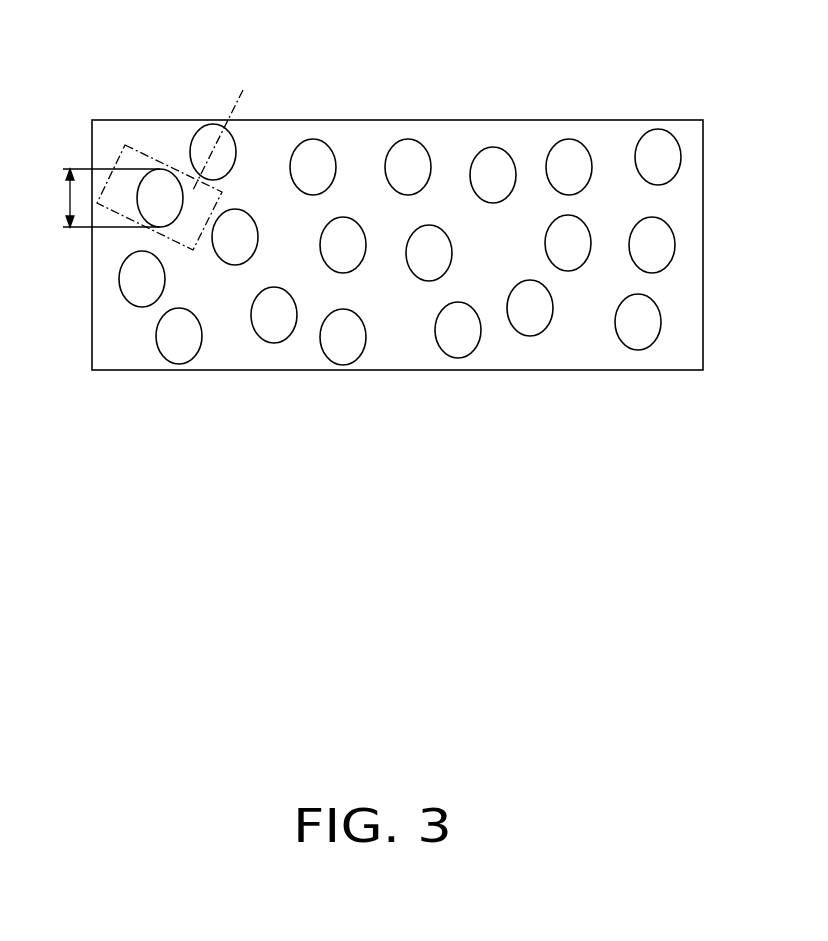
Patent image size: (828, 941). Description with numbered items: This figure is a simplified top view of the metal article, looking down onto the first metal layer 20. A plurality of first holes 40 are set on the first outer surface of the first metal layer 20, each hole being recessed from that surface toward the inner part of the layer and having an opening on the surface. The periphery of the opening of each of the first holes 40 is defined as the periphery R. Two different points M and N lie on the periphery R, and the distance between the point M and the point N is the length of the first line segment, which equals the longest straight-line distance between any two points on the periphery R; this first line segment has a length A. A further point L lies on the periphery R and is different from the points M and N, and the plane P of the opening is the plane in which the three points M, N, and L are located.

The first metal layer 20 is at (457, 135).
The first holes 40 is at (650, 148).
The plane of the opening P is at (182, 163).
The periphery of the opening R is at (208, 123).
The point on the periphery M is at (160, 170).
The point on the periphery L is at (140, 183).
The point on the periphery N is at (158, 228).
The length of the first line segment A is at (99, 198).